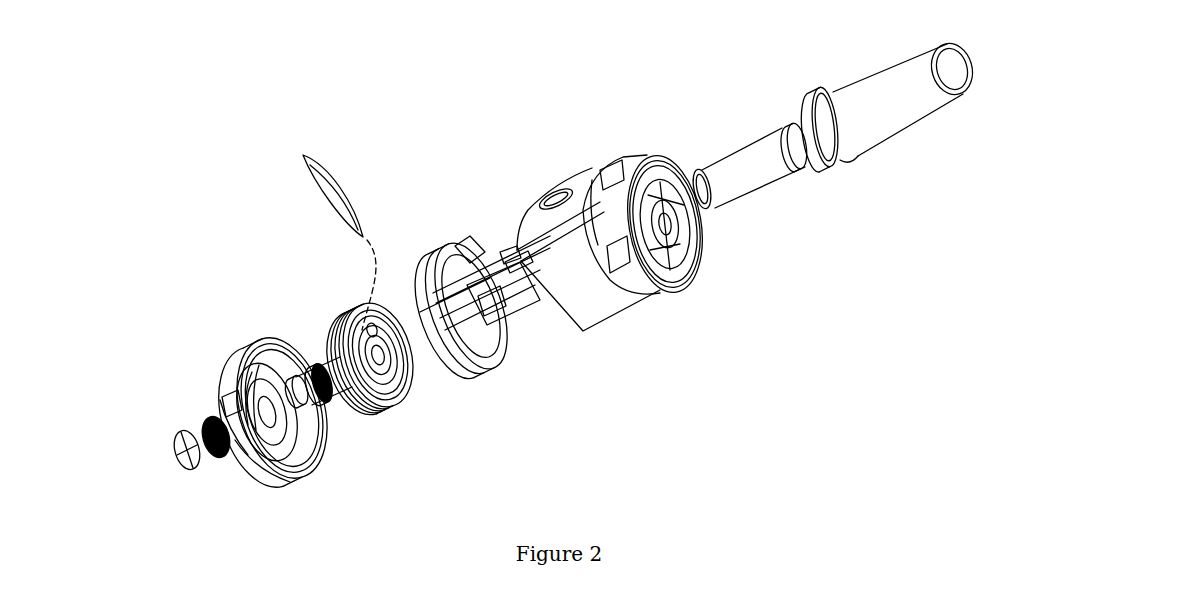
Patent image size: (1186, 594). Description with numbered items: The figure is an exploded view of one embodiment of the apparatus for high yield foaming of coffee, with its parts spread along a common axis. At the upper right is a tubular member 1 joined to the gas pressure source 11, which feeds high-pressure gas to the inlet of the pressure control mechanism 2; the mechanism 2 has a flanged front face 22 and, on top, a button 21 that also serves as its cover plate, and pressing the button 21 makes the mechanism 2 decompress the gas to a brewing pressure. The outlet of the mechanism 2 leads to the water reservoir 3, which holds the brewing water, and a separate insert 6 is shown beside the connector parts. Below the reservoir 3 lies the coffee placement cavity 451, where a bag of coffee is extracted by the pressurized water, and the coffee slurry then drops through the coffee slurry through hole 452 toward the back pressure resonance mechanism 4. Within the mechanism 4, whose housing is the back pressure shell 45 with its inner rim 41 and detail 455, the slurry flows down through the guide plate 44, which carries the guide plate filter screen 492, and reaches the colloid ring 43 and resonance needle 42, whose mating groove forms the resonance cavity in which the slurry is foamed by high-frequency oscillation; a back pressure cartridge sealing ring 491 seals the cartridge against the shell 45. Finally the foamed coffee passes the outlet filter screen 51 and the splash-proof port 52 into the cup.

The handle tube 1 is at (871, 92).
The gas pressure source 11 is at (745, 165).
The pressure control mechanism 2 is at (590, 295).
The housing flange 22 is at (652, 160).
The button 21 is at (458, 230).
The water reservoir 3 is at (450, 380).
The blade insert 6 is at (348, 187).
The back pressure resonance mechanism 4 is at (225, 348).
The cap inner rim 41 is at (242, 343).
The resonance needle 42 is at (320, 440).
The colloid ring 43 is at (297, 352).
The guide plate 44 is at (332, 400).
The back pressure shell 45 is at (282, 473).
The coffee placement cavity 451 is at (407, 392).
The coffee slurry through hole 452 is at (408, 378).
The bearing detent 455 is at (346, 322).
The back pressure cartridge sealing ring 491 is at (265, 468).
The guide plate filter screen 492 is at (318, 362).
The outlet filter screen 51 is at (208, 423).
The splash-proof port 52 is at (168, 456).